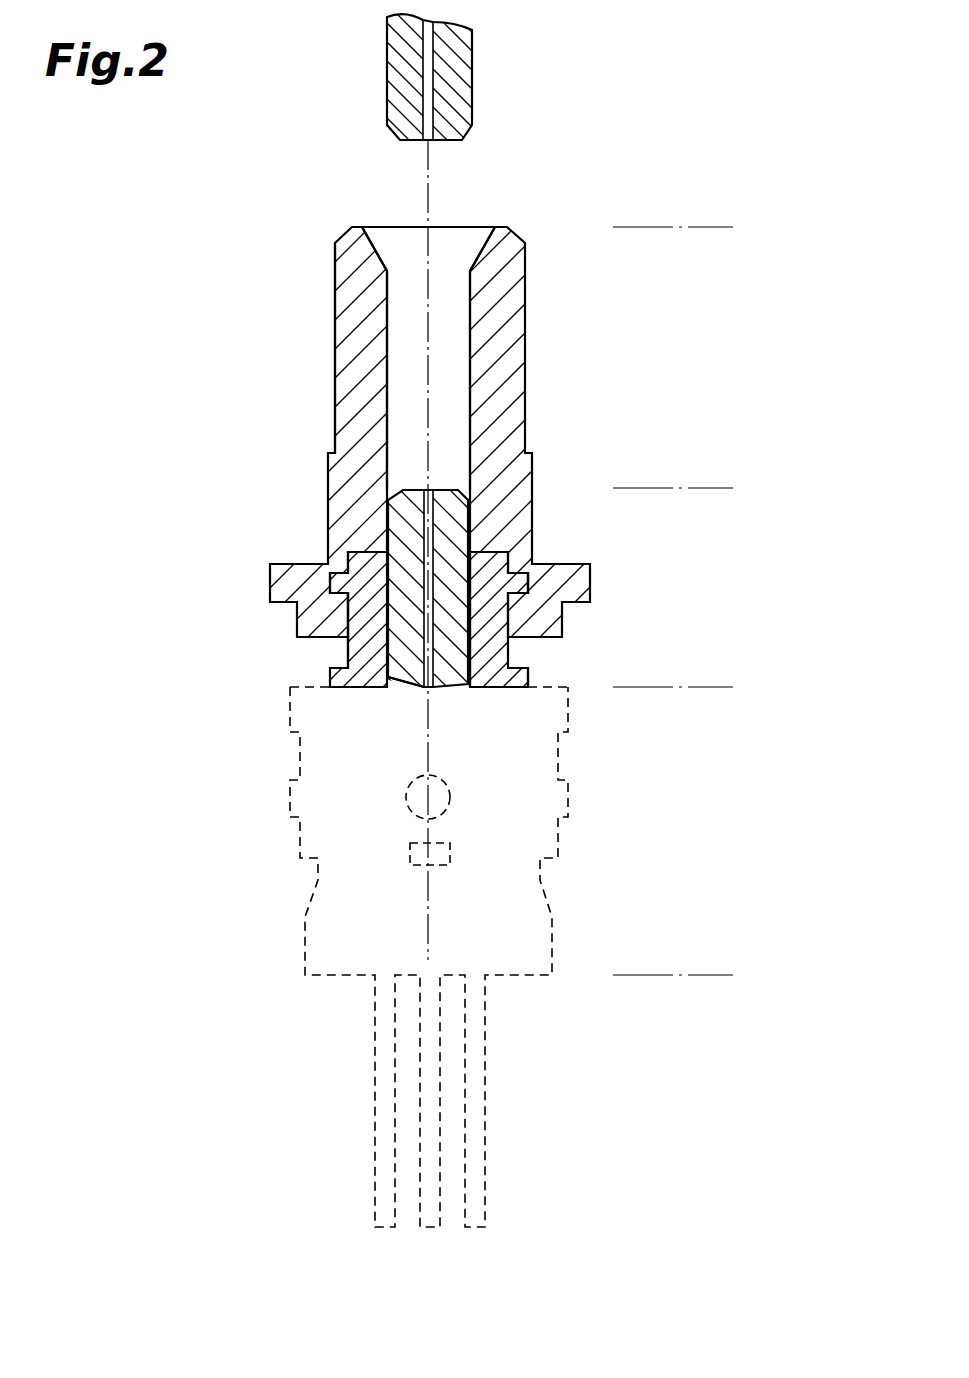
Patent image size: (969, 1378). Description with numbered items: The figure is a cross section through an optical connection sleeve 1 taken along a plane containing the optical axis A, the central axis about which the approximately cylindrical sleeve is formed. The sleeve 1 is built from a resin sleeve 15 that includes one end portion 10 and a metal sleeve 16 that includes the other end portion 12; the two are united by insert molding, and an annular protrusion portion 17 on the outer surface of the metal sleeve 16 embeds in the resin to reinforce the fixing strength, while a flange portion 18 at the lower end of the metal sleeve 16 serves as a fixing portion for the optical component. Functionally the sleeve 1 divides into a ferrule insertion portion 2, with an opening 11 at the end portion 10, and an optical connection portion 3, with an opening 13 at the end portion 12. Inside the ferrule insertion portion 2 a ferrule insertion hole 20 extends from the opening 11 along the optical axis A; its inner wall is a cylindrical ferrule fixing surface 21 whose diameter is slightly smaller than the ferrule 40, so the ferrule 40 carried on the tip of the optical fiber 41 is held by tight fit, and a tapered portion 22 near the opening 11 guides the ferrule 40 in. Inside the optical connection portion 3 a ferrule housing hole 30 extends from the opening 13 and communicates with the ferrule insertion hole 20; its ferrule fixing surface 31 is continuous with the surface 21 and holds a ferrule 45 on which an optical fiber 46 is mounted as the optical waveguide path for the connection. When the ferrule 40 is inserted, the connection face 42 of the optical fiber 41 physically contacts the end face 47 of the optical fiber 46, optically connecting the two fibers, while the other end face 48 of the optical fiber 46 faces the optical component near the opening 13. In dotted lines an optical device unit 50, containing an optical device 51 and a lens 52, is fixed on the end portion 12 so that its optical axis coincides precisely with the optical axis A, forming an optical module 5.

The optical connection sleeve 1 is at (775, 337).
The ferrule insertion portion 2 is at (730, 227).
The optical connection portion 3 is at (730, 488).
The optical module 5 is at (830, 837).
The one end portion 10 is at (310, 226).
The opening 11 is at (390, 230).
The other end portion 12 is at (291, 671).
The opening 13 is at (408, 688).
The resin sleeve 15 is at (333, 333).
The metal sleeve 16 is at (348, 650).
The protrusion portion 17 is at (528, 582).
The flange portion 18 is at (530, 678).
The ferrule insertion hole 20 is at (457, 213).
The ferrule fixing surface 21 is at (447, 383).
The tapered portion 22 is at (478, 243).
The ferrule housing hole 30 is at (462, 689).
The ferrule fixing surface 31 is at (470, 532).
The ferrule 40 is at (450, 83).
The optical fiber 41 is at (427, 65).
The connection face 42 is at (423, 142).
The ferrule 45 is at (457, 658).
The optical fiber 46 is at (417, 547).
The end face 47 is at (427, 490).
The other end face 48 is at (432, 690).
The optical device unit 50 is at (730, 687).
The optical device 51 is at (418, 865).
The lens 52 is at (414, 812).
The optical axis A is at (432, 200).